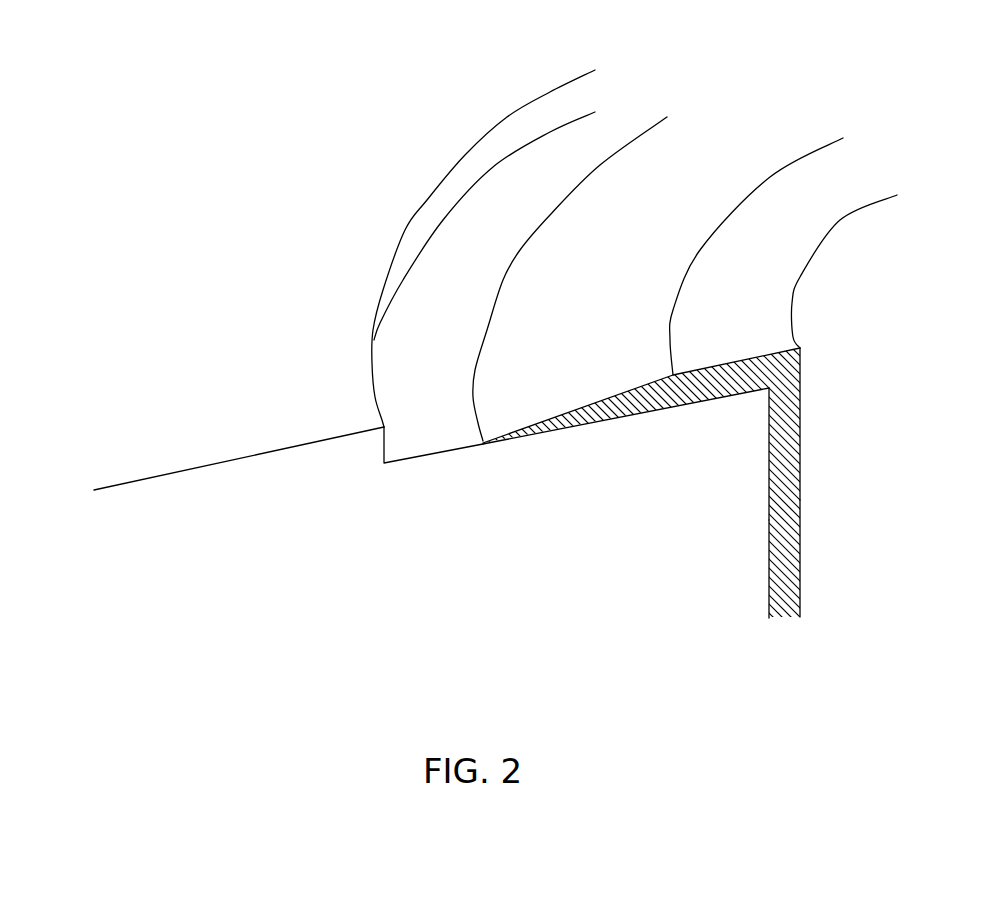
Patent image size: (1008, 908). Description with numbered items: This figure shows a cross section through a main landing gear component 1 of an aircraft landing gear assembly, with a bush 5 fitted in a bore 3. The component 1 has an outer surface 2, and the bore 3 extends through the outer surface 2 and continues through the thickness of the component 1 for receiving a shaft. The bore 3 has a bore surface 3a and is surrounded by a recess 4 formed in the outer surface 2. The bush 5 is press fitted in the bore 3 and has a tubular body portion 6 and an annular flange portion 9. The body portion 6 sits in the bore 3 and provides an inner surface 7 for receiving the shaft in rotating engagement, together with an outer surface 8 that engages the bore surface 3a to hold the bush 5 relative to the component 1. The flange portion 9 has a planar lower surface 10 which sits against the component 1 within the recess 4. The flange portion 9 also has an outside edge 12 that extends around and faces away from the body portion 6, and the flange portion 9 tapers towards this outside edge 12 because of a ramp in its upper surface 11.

The main landing gear component 1 is at (382, 556).
The outer surface 2 is at (167, 383).
The bore 3 is at (865, 411).
The bore surface 3a is at (772, 512).
The recess 4 is at (463, 253).
The bush 5 is at (792, 457).
The tubular body portion 6 is at (787, 597).
The inner surface 7 is at (802, 567).
The outer surface 8 is at (768, 580).
The annular flange portion 9 is at (743, 360).
The planar lower surface 10 is at (628, 418).
The upper surface 11 is at (690, 173).
The outside edge 12 is at (600, 160).